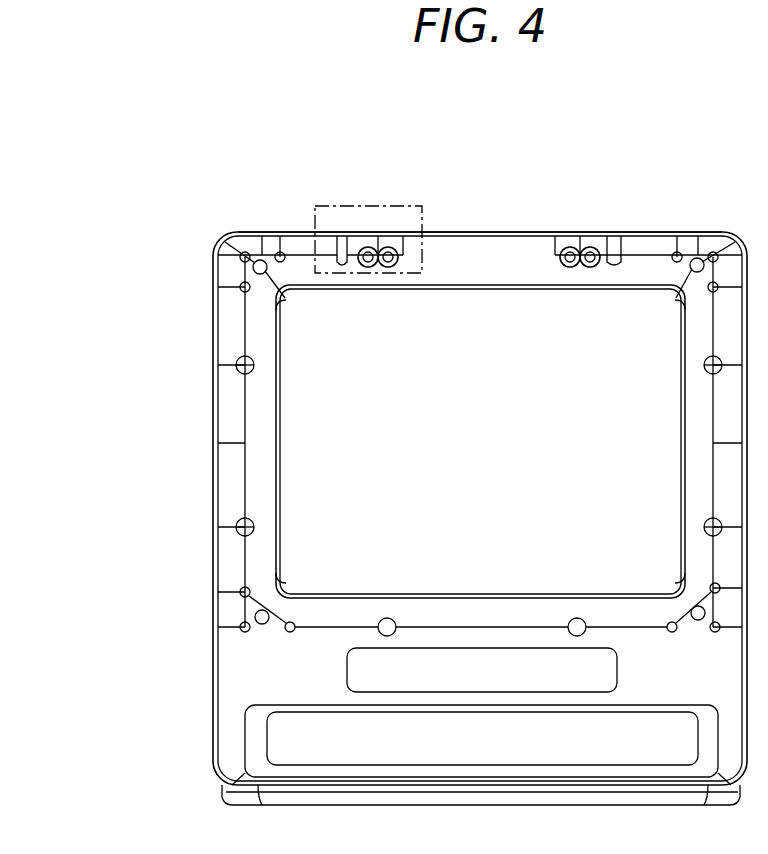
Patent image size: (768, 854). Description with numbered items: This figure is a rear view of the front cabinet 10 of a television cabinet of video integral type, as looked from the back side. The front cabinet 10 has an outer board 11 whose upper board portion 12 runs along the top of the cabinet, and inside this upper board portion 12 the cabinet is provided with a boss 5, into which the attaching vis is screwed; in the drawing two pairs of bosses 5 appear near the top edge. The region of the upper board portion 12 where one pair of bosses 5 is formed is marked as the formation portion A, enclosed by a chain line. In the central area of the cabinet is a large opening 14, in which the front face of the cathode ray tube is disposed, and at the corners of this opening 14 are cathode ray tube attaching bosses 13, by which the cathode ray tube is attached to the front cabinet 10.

The boss 5 is at (366, 268).
The cabinet 10 is at (643, 224).
The outer board 11 is at (483, 270).
The upper board portion 12 is at (484, 231).
The cathode ray tube attaching boss 13 is at (285, 300).
The opening 14 is at (278, 445).
The formation portion A is at (403, 206).